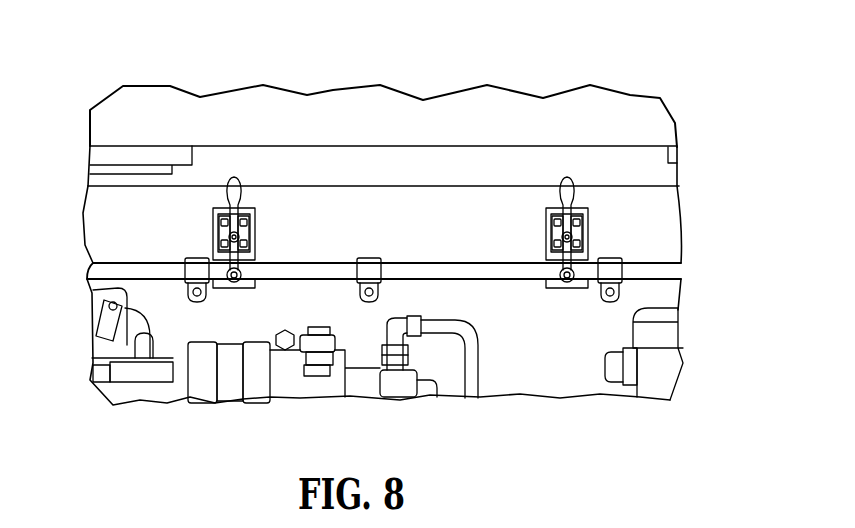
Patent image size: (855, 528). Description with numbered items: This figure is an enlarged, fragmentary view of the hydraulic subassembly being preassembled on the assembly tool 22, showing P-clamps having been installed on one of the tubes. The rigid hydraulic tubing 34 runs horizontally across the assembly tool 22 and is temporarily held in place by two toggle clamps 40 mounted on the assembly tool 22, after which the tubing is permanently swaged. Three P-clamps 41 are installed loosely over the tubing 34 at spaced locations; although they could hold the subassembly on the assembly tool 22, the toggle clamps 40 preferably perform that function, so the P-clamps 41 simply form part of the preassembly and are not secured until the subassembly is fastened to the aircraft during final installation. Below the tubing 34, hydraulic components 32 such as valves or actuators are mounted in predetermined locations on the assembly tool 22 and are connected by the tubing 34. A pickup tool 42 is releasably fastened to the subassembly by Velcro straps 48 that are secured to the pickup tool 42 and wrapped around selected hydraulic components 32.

The assembly tool 22 is at (448, 218).
The hydraulic components 32 is at (113, 304).
The hydraulic tubing 34 is at (651, 270).
The toggle clamps 40 is at (231, 176).
The P-clamps 41 is at (195, 270).
The pickup tool 42 is at (198, 378).
The Velcro straps 48 is at (228, 385).